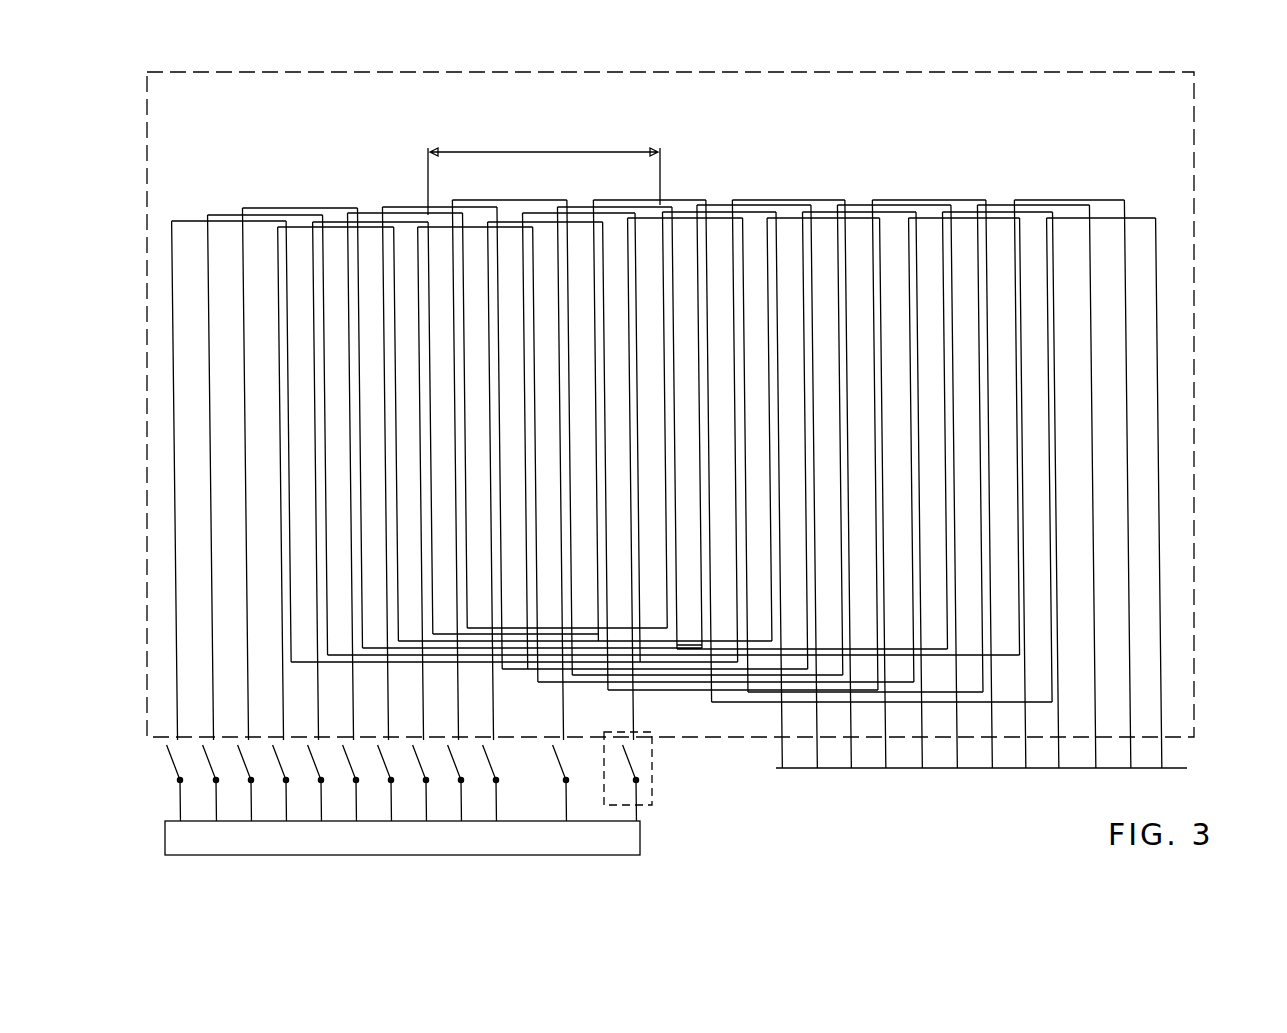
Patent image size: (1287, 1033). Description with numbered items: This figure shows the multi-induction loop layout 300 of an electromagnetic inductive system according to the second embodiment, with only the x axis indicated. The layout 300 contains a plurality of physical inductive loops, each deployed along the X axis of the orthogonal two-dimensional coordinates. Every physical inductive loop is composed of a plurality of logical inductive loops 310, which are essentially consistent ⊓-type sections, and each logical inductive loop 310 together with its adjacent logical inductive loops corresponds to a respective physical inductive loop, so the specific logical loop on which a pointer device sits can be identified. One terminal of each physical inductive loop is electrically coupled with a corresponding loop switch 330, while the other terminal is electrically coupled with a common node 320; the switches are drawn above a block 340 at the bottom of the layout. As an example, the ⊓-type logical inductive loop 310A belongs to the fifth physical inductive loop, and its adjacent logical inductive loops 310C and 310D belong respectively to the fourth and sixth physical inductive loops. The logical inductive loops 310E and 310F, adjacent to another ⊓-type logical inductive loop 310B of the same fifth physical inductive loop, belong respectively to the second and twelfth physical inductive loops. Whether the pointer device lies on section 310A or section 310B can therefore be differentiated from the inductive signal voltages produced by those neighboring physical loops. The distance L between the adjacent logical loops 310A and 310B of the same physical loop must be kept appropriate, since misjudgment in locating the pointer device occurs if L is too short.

The multi-induction loop layout 300 is at (1197, 424).
The logical inductive loop 310 is at (424, 148).
The ⊓-type logical inductive loop 310A is at (326, 222).
The ⊓-type logical inductive loop 310B is at (678, 212).
The logical inductive loop 310C is at (290, 212).
The logical inductive loop 310D is at (372, 214).
The logical inductive loop 310E is at (714, 209).
The logical inductive loop 310F is at (700, 234).
The common node 320 is at (925, 770).
The loop switch 330 is at (655, 770).
The driving circuit 340 is at (397, 850).